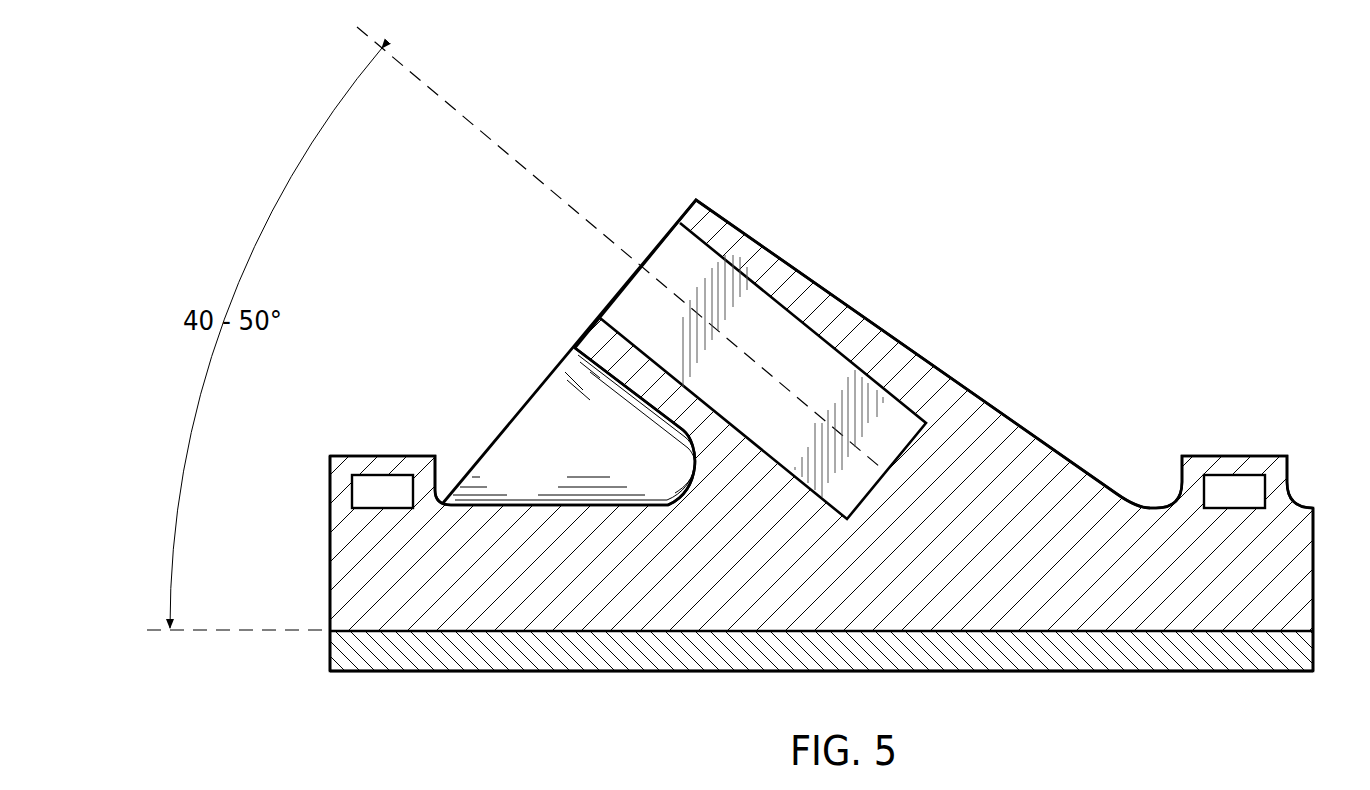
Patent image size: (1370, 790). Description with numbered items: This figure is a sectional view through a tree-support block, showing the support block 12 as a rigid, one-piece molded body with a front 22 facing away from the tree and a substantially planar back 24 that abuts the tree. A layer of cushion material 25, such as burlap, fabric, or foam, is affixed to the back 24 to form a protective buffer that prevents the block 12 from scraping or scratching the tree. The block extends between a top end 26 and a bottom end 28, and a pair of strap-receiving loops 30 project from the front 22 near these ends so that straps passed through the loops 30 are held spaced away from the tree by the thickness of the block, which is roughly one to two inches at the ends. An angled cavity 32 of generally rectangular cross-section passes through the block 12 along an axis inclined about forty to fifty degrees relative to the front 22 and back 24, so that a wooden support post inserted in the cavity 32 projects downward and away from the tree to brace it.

The support block 12 is at (996, 178).
The front 22 is at (912, 340).
The back 24 is at (613, 640).
The cushion material 25 is at (498, 673).
The top end 26 is at (1318, 570).
The bottom end 28 is at (325, 547).
The strap-receiving loop 30 is at (415, 456).
The angled cavity 32 is at (621, 304).